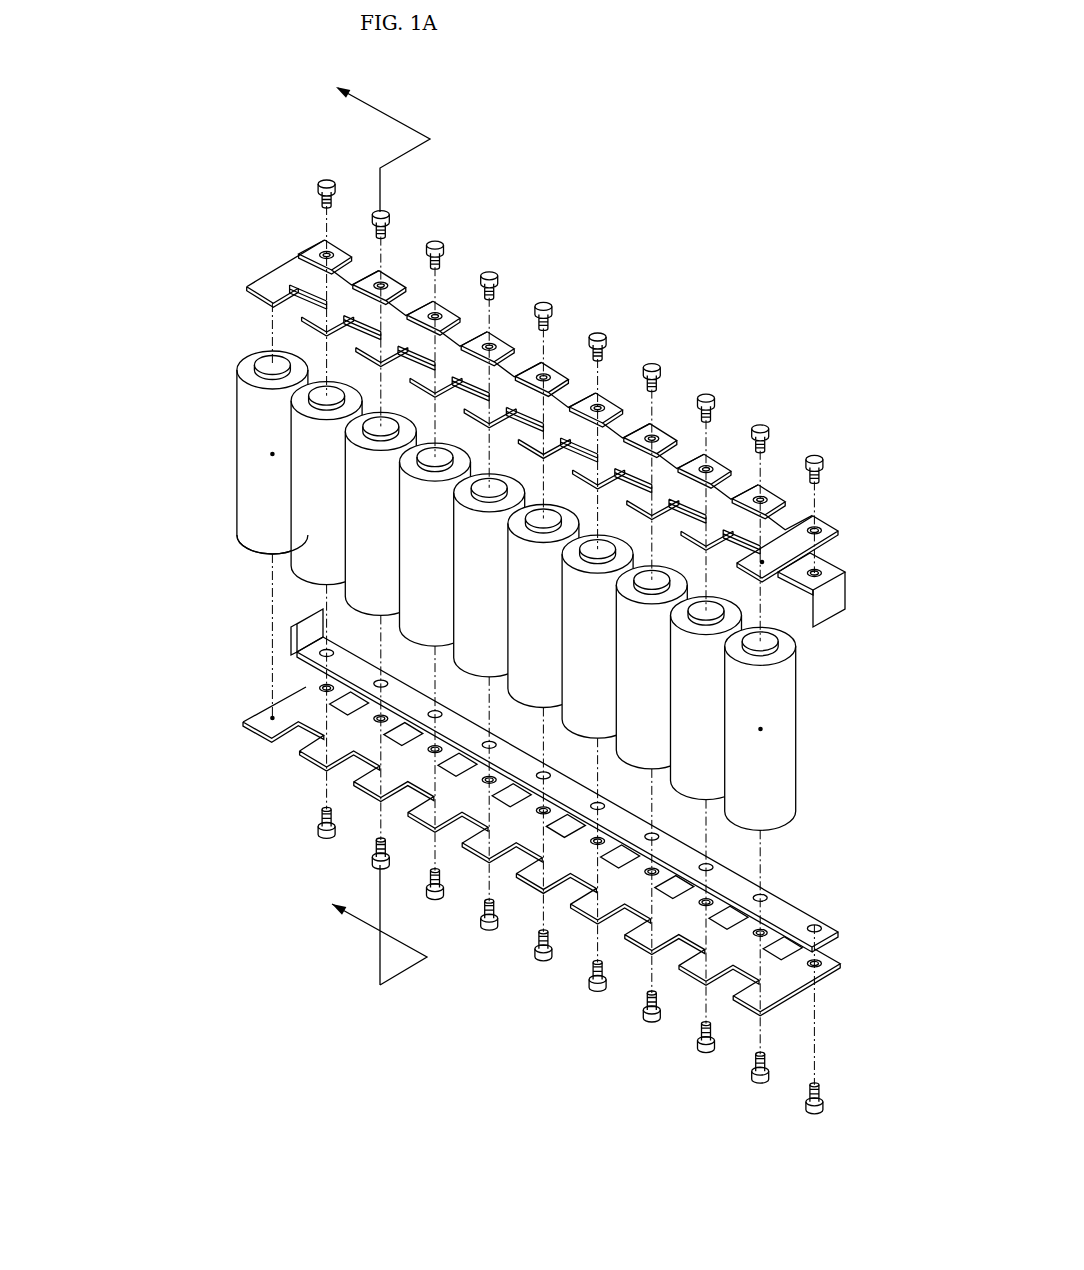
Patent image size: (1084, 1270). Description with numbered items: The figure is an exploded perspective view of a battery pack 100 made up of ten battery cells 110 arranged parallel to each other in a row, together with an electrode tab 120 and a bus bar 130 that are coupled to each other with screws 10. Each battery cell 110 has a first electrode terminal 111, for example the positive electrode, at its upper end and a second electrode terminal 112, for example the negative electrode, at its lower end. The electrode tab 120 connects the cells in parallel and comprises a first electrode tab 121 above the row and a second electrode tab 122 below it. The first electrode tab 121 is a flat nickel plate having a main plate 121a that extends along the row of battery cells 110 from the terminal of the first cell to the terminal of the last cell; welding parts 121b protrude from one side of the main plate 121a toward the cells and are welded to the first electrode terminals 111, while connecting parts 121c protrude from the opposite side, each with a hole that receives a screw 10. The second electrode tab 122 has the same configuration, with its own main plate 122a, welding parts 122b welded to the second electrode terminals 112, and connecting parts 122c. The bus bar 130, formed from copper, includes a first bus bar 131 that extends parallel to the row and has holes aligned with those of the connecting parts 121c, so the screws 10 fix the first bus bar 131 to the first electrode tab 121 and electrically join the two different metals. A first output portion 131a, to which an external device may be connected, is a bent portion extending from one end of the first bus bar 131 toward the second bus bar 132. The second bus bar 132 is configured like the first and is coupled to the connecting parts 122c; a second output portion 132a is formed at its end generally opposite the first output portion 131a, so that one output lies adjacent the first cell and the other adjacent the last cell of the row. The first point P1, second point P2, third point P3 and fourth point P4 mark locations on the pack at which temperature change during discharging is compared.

The battery pack 100 is at (178, 140).
The screw 10 is at (814, 454).
The battery cell 110 is at (505, 584).
The first electrode terminal 111 is at (257, 364).
The second electrode terminal 112 is at (248, 548).
The electrode tab 120 is at (448, 624).
The first electrode tab 121 is at (477, 407).
The main plate 121a is at (506, 411).
The welding part 121b is at (292, 293).
The connecting part 121c is at (315, 245).
The second electrode tab 122 is at (478, 825).
The main plate 122a is at (318, 714).
The welding part 122b is at (506, 851).
The connecting part 122c is at (318, 678).
The bus bar 130 is at (567, 752).
The first bus bar 131 is at (849, 620).
The first output portion 131a is at (846, 596).
The second bus bar 132 is at (539, 767).
The second output portion 132a is at (302, 620).
The first point P1 is at (761, 729).
The second point P2 is at (762, 560).
The third point P3 is at (272, 454).
The fourth point P4 is at (272, 718).